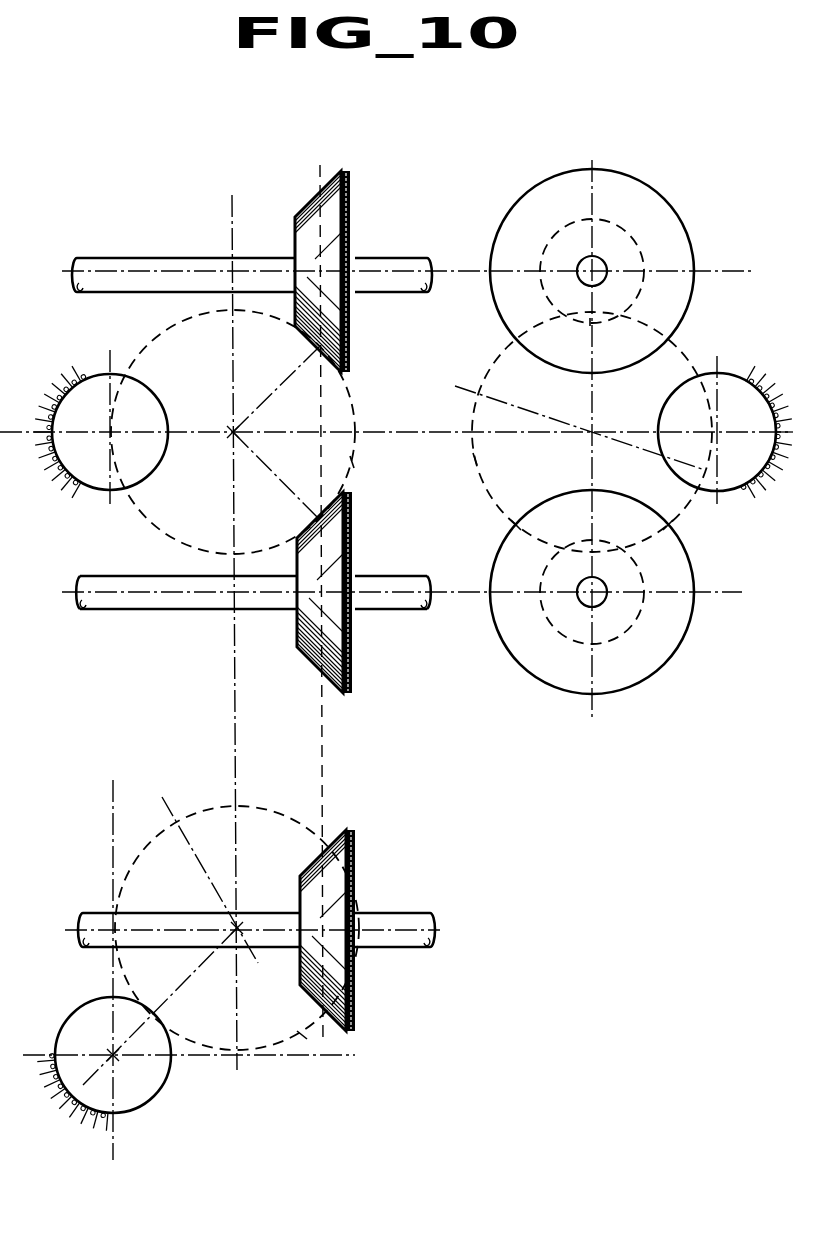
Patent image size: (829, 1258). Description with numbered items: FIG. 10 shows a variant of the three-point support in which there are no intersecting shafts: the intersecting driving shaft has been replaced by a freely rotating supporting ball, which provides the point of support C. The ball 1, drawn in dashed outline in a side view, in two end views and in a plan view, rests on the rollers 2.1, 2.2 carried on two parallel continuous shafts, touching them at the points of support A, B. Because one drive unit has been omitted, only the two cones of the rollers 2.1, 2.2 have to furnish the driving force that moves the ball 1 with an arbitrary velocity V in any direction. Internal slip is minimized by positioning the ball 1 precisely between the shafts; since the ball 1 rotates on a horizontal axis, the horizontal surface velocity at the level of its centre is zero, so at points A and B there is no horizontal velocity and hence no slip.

The ball 1 is at (475, 458).
The roller 2.1 is at (582, 600).
The roller 2.2 is at (580, 268).
The point of support A is at (318, 521).
The point of support B is at (318, 349).
The point of support C is at (150, 426).
The velocity V is at (233, 432).